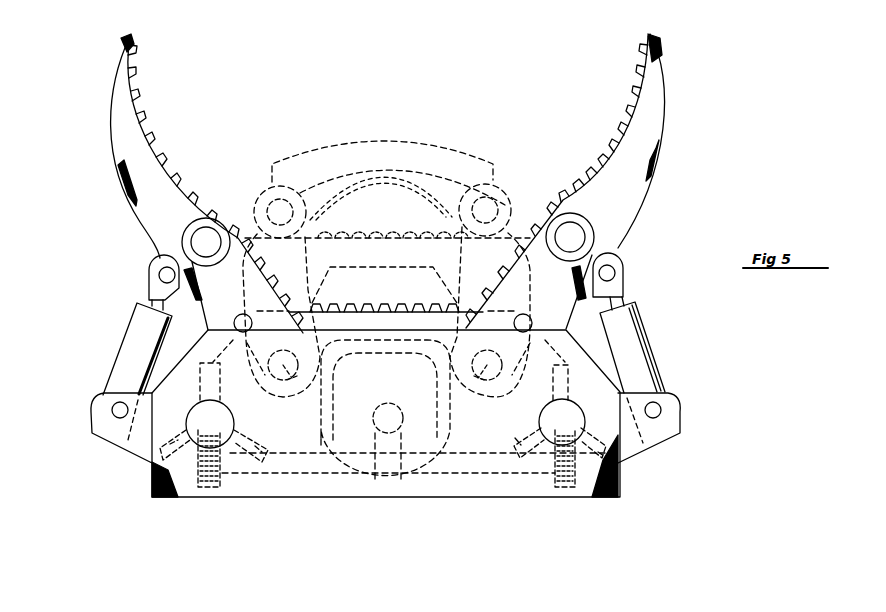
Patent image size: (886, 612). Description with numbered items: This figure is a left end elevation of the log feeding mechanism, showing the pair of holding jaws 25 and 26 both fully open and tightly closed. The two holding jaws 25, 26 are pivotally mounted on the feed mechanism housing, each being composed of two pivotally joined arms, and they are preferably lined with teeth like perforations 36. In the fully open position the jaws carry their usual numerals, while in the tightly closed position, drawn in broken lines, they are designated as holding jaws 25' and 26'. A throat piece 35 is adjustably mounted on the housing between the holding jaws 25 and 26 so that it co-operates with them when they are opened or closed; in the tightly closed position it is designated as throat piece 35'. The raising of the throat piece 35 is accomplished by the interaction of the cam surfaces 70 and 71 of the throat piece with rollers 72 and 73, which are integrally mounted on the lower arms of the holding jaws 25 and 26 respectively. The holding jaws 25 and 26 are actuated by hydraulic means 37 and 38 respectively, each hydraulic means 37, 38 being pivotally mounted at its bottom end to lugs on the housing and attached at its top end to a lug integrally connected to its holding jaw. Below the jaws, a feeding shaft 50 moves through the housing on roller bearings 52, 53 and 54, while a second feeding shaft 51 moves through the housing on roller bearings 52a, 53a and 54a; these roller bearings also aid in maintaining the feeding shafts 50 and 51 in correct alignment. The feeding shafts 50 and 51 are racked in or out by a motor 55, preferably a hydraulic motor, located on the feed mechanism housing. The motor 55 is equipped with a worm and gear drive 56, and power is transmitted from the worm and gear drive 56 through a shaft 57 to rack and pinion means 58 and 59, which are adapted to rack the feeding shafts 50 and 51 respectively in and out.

The holding jaw 25 is at (581, 181).
The holding jaw 26 is at (190, 183).
The teeth like perforations 36 is at (160, 153).
The holding jaw in tightly closed position 25' is at (368, 260).
The holding jaw in tightly closed position 26' is at (415, 260).
The throat piece 35 is at (384, 292).
The throat piece in tightly closed position 35' is at (387, 225).
The hydraulic means 37 is at (652, 338).
The hydraulic means 38 is at (122, 360).
The feeding shaft 50 is at (577, 410).
The feeding shaft 51 is at (232, 414).
The roller bearing 52 is at (618, 465).
The roller bearing 52a is at (254, 444).
The roller bearing 53 is at (568, 381).
The roller bearing 53a is at (216, 386).
The roller bearing 54 is at (520, 440).
The roller bearing 54a is at (185, 431).
The motor 55 is at (333, 445).
The worm and gear drive 56 is at (388, 483).
The shaft 57 is at (524, 470).
The rack and pinion means 58 is at (568, 488).
The rack and pinion means 59 is at (220, 484).
The cam surface 70 is at (503, 334).
The cam surface 71 is at (268, 342).
The roller 72 is at (531, 319).
The roller 73 is at (242, 316).